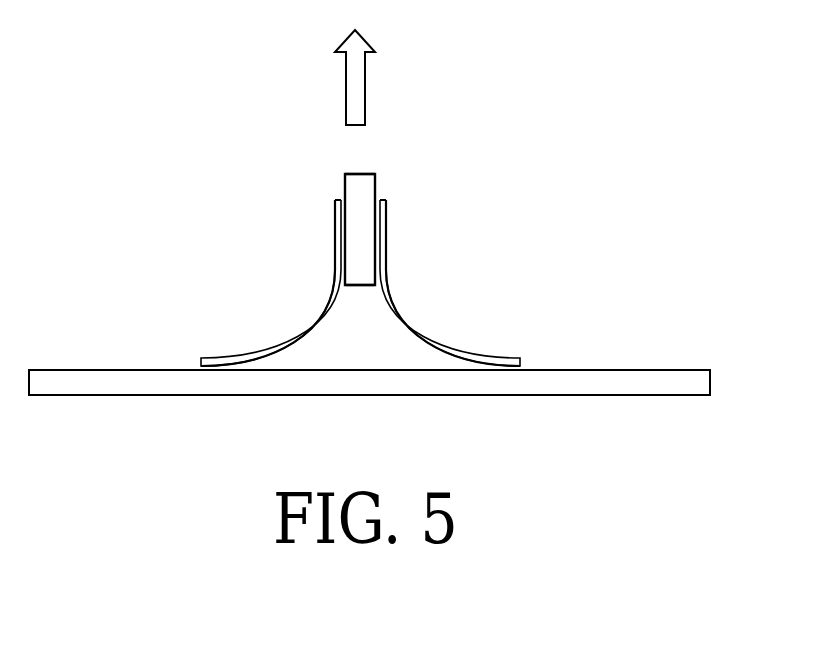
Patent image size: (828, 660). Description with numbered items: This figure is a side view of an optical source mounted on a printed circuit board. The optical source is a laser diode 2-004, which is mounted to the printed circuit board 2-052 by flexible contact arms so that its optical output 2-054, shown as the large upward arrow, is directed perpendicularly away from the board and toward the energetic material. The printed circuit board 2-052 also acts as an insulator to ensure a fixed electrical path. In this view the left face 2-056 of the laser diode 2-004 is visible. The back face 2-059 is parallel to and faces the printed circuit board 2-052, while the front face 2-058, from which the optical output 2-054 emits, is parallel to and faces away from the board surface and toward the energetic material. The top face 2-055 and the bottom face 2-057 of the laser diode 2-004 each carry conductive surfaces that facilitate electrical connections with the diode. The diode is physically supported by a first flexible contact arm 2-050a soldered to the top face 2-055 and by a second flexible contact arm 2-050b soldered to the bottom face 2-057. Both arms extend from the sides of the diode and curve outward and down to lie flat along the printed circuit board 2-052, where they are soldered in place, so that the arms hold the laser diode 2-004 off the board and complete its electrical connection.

The laser diode 2-004 is at (355, 239).
The first flexible contact arm 2-050a is at (266, 265).
The second flexible contact arm 2-050b is at (449, 267).
The printed circuit board 2-052 is at (595, 369).
The optical output 2-054 is at (365, 97).
The top face 2-055 is at (342, 198).
The left face 2-056 is at (351, 237).
The bottom face 2-057 is at (379, 198).
The front face 2-058 is at (346, 171).
The back face 2-059 is at (367, 287).